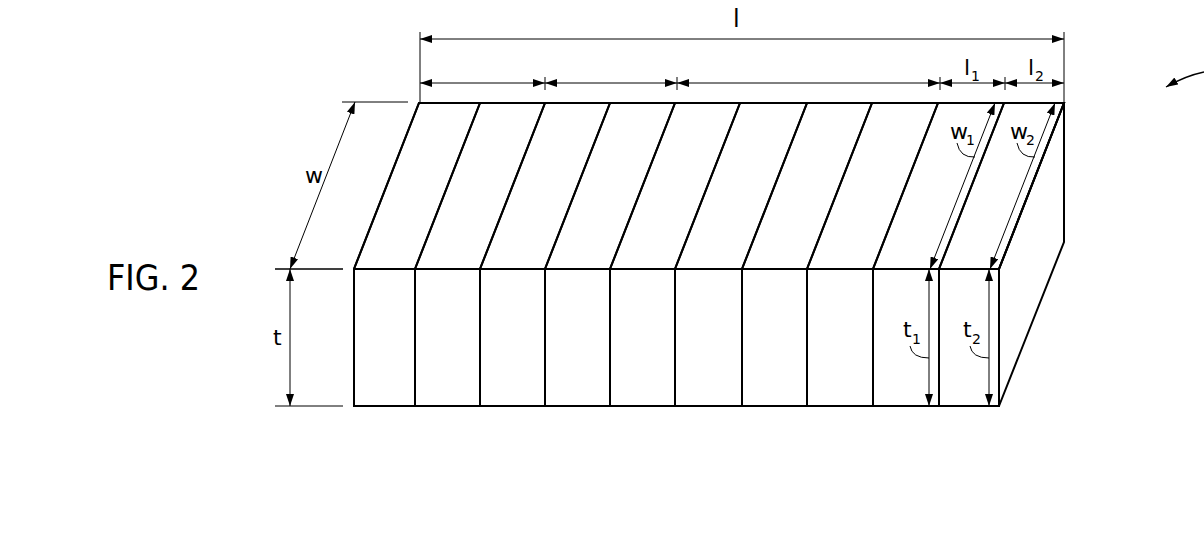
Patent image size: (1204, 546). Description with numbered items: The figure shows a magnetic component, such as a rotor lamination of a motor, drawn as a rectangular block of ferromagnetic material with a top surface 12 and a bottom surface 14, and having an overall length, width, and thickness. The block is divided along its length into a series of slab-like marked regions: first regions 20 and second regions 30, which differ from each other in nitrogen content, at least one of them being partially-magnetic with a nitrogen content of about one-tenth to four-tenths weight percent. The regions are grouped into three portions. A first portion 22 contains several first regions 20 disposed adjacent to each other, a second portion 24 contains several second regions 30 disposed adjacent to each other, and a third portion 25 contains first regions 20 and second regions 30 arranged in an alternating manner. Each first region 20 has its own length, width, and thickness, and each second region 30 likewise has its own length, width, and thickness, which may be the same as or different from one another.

The top surface 12 is at (982, 238).
The bottom surface 14 is at (1033, 320).
The first region 20 is at (405, 190).
The second region 30 is at (531, 190).
The first portion 22 is at (470, 83).
The second portion 24 is at (586, 83).
The third portion 25 is at (785, 83).